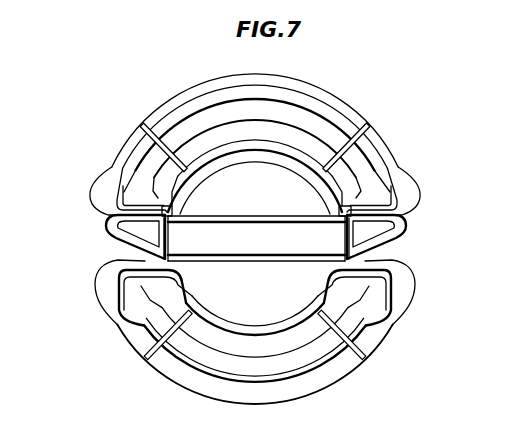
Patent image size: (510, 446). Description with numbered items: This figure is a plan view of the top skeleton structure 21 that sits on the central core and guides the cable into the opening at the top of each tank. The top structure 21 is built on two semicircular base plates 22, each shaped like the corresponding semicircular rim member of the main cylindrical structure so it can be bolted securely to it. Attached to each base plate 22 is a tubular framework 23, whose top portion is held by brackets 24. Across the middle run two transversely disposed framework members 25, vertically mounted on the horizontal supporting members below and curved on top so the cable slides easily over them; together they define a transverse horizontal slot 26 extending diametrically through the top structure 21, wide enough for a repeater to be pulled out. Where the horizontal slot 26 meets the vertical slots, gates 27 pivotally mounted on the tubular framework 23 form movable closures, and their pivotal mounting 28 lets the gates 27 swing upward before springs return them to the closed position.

The top skeleton structure 21 is at (100, 114).
The semicircular base plate 22 is at (366, 124).
The tubular framework 23 is at (142, 317).
The bracket 24 is at (371, 349).
The transversely disposed framework member 25 is at (221, 216).
The transverse horizontal slot 26 is at (103, 244).
The gate 27 is at (165, 239).
The pivotal mounting 28 is at (341, 209).